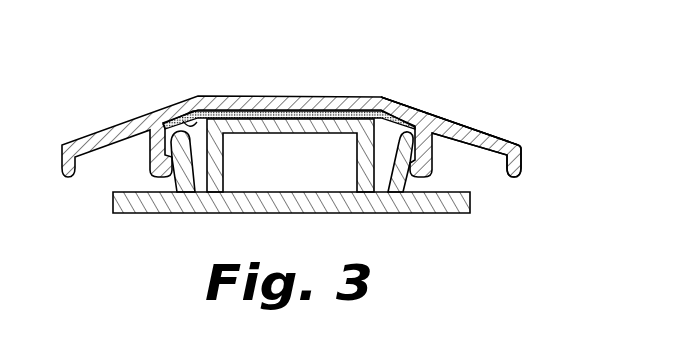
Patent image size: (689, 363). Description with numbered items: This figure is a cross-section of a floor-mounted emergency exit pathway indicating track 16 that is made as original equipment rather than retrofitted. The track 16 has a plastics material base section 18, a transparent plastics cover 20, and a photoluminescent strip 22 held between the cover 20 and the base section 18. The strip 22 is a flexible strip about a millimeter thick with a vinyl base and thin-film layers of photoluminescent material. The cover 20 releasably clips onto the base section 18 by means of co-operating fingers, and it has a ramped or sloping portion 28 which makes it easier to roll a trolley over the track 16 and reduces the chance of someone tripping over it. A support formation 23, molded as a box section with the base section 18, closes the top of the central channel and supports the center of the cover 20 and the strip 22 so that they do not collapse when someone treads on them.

The track 16 is at (383, 80).
The base section 18 is at (423, 203).
The cover 20 is at (496, 130).
The photoluminescent strip 22 is at (195, 127).
The support formation 23 is at (290, 133).
The sloping portion 28 is at (464, 123).